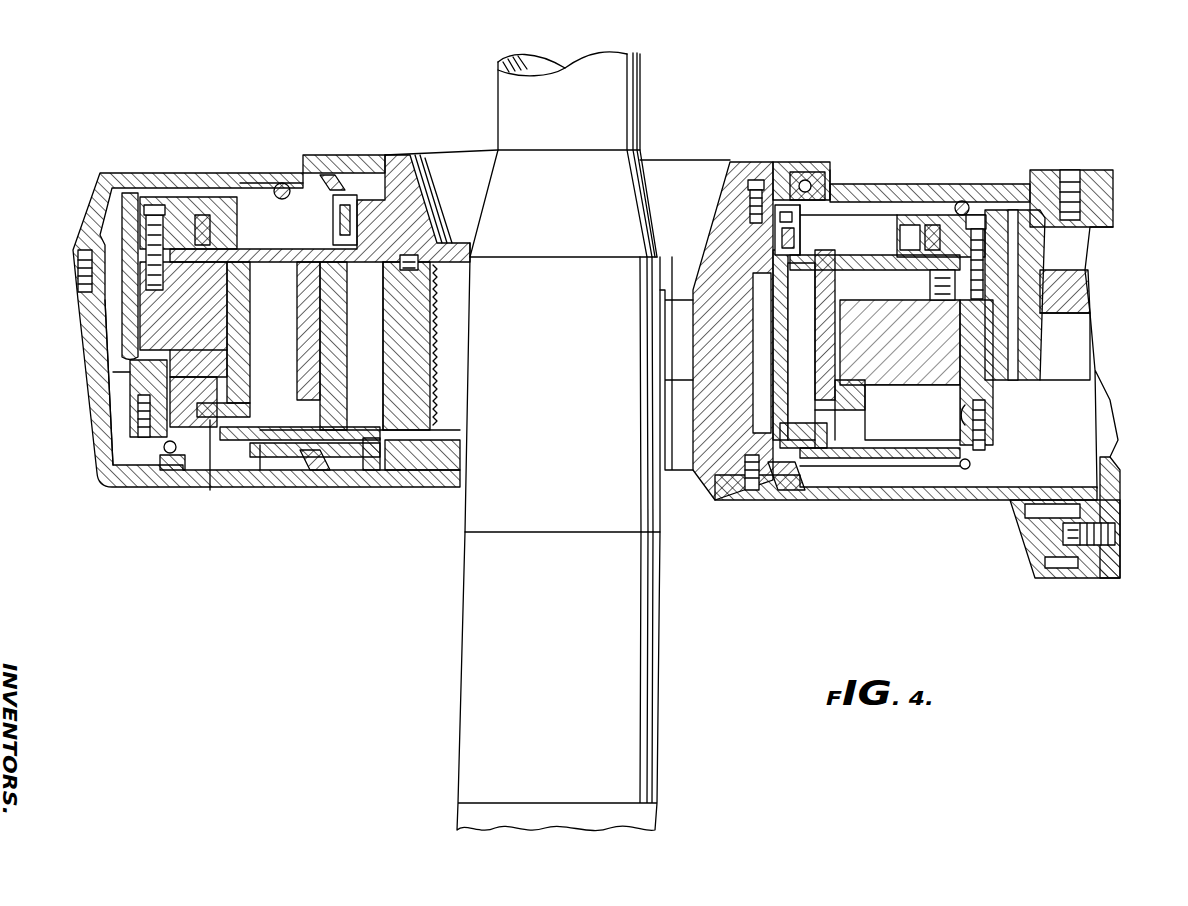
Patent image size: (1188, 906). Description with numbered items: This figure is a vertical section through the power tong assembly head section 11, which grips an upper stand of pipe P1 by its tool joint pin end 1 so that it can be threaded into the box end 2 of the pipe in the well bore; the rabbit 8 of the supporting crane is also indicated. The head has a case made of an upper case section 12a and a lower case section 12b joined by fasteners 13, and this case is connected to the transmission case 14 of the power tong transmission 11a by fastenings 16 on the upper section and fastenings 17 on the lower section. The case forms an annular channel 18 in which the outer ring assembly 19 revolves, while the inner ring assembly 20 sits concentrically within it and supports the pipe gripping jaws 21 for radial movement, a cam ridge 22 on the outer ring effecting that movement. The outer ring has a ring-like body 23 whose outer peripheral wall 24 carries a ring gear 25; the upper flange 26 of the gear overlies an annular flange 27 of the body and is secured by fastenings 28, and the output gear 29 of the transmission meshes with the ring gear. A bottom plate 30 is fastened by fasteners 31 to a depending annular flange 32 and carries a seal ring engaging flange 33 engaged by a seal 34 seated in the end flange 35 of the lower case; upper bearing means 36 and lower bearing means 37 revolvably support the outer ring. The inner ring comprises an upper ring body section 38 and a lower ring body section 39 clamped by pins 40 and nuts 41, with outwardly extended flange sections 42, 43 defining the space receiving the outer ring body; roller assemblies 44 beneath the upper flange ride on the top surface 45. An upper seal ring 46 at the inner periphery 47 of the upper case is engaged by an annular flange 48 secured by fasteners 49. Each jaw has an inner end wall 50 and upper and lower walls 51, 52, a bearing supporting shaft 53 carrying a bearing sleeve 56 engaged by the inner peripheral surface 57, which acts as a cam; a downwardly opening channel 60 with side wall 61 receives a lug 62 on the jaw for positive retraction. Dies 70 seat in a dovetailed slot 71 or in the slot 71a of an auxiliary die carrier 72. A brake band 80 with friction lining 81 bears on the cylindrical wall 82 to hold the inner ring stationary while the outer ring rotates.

The upper stand of pipe P1 is at (640, 92).
The tool joint pin end 1 is at (465, 520).
The box end 2 is at (635, 697).
The power tong assembly head section 11 is at (222, 170).
The power tong transmission 11a is at (1115, 180).
The upper case section 12a is at (110, 175).
The lower case section 12b is at (80, 338).
The fasteners 13 is at (78, 262).
The transmission case 14 is at (1113, 165).
The fastenings 16 is at (1070, 170).
The fastenings 17 is at (1060, 533).
The annular channel 18 is at (115, 420).
The outer ring assembly 19 is at (105, 310).
The inner ring assembly 20 is at (715, 435).
The pipe gripping jaws 21 is at (443, 273).
The cam ridge 22 is at (270, 469).
The ring-like body 23 is at (955, 370).
The outer peripheral wall 24 is at (1020, 345).
The ring gear 25 is at (1005, 325).
The upper flange 26 is at (950, 215).
The annular flange 27 is at (1000, 270).
The fastenings 28 is at (978, 212).
The output gear 29 is at (1093, 270).
The bottom plate 30 is at (905, 470).
The fasteners 31 is at (985, 452).
The annular flange 32 is at (965, 408).
The seal ring engaging flange 33 is at (760, 480).
The seal 34 is at (785, 480).
The end flange 35 is at (800, 448).
The upper bearing race and ball bearing means 36 is at (963, 201).
The lower bearing race and ball bearing means 37 is at (960, 475).
The upper ring body section 38 is at (745, 300).
The lower ring body section 39 is at (860, 395).
The pins 40 is at (808, 415).
The nuts 41 is at (812, 448).
The outwardly extended flange section 42 is at (860, 272).
The outwardly extended flange section 43 is at (905, 425).
The roller assemblies 44 is at (945, 300).
The top surface 45 is at (890, 310).
The upper seal ring 46 is at (812, 172).
The inner periphery 47 is at (840, 182).
The annular flange 48 is at (800, 182).
The fasteners 49 is at (748, 183).
The inner end wall 50 is at (418, 352).
The upper wall 51 is at (210, 285).
The lower wall 52 is at (330, 418).
The bearing supporting shaft 53 is at (270, 300).
The bearing sleeve 56 is at (330, 352).
The inner peripheral surface 57 is at (230, 332).
The downwardly opening channel 60 is at (120, 373).
The side wall 61 is at (205, 375).
The lug 62 is at (135, 390).
The pipe engaging and gripping dies 70 is at (428, 325).
The dovetailed slot 71 is at (415, 412).
The slot 71a is at (435, 382).
The auxiliary die carriers 72 is at (405, 300).
The brake band 80 is at (782, 245).
The friction lining 81 is at (790, 275).
The cylindrical wall 82 is at (780, 230).
The rabbit 8 is at (250, 185).